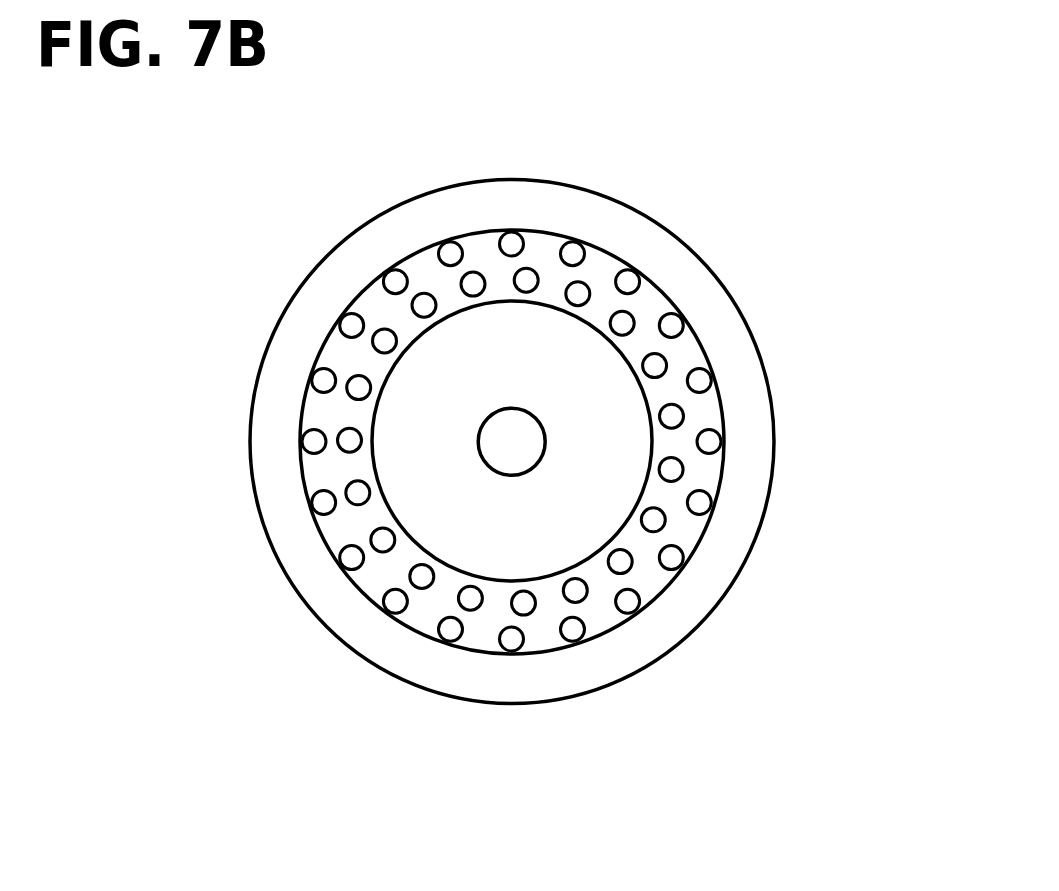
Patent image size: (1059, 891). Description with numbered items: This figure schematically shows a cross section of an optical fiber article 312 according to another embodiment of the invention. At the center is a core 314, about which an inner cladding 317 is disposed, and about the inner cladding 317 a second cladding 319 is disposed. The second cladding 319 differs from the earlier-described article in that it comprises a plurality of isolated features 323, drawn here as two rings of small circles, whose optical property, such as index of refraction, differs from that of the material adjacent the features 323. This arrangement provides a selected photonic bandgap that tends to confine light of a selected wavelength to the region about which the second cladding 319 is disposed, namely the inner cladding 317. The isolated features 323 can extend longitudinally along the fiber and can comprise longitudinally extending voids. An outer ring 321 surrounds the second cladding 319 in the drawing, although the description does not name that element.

The optical fiber article 312 is at (759, 211).
The core 314 is at (510, 443).
The inner cladding 317 is at (545, 540).
The second cladding 319 is at (690, 532).
The outer rim 321 is at (523, 208).
The isolated features 323 is at (450, 630).